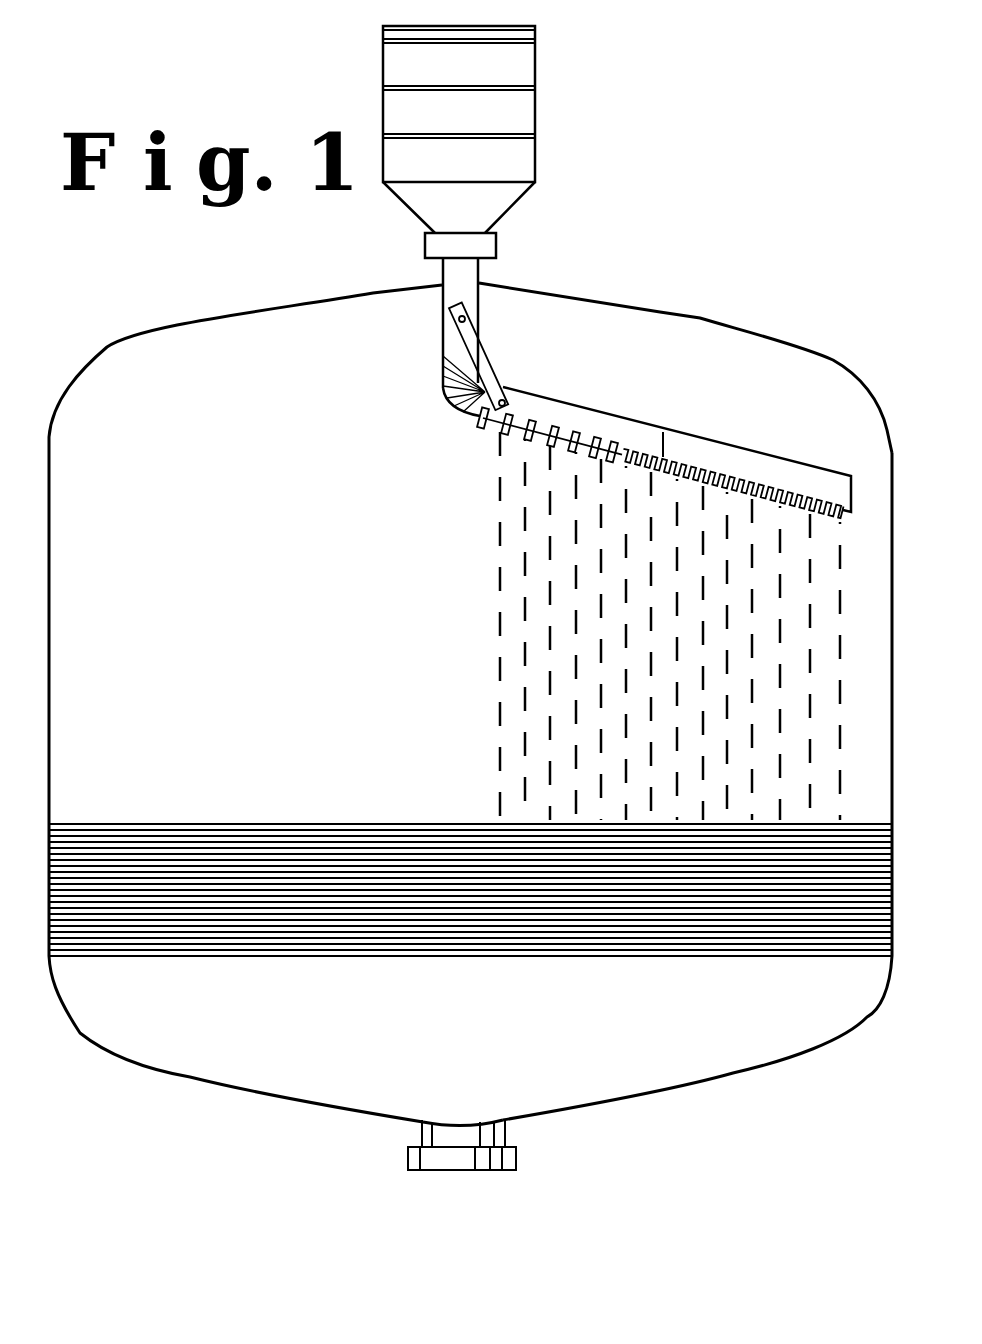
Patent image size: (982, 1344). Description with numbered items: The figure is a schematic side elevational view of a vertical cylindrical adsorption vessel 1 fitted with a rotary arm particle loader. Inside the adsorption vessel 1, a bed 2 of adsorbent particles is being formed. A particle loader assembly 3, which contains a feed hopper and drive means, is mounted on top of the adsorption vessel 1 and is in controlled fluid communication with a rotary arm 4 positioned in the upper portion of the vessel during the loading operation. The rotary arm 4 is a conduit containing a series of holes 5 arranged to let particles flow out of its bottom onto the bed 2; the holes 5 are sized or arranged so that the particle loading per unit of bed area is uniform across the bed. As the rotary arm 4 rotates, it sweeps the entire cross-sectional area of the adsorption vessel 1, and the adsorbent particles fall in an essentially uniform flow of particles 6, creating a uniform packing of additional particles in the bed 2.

The adsorption vessel 1 is at (614, 298).
The bed 2 is at (738, 947).
The particle loader assembly 3 is at (537, 118).
The rotary arm 4 is at (638, 422).
The holes 5 is at (743, 472).
The flow of particles 6 is at (728, 680).